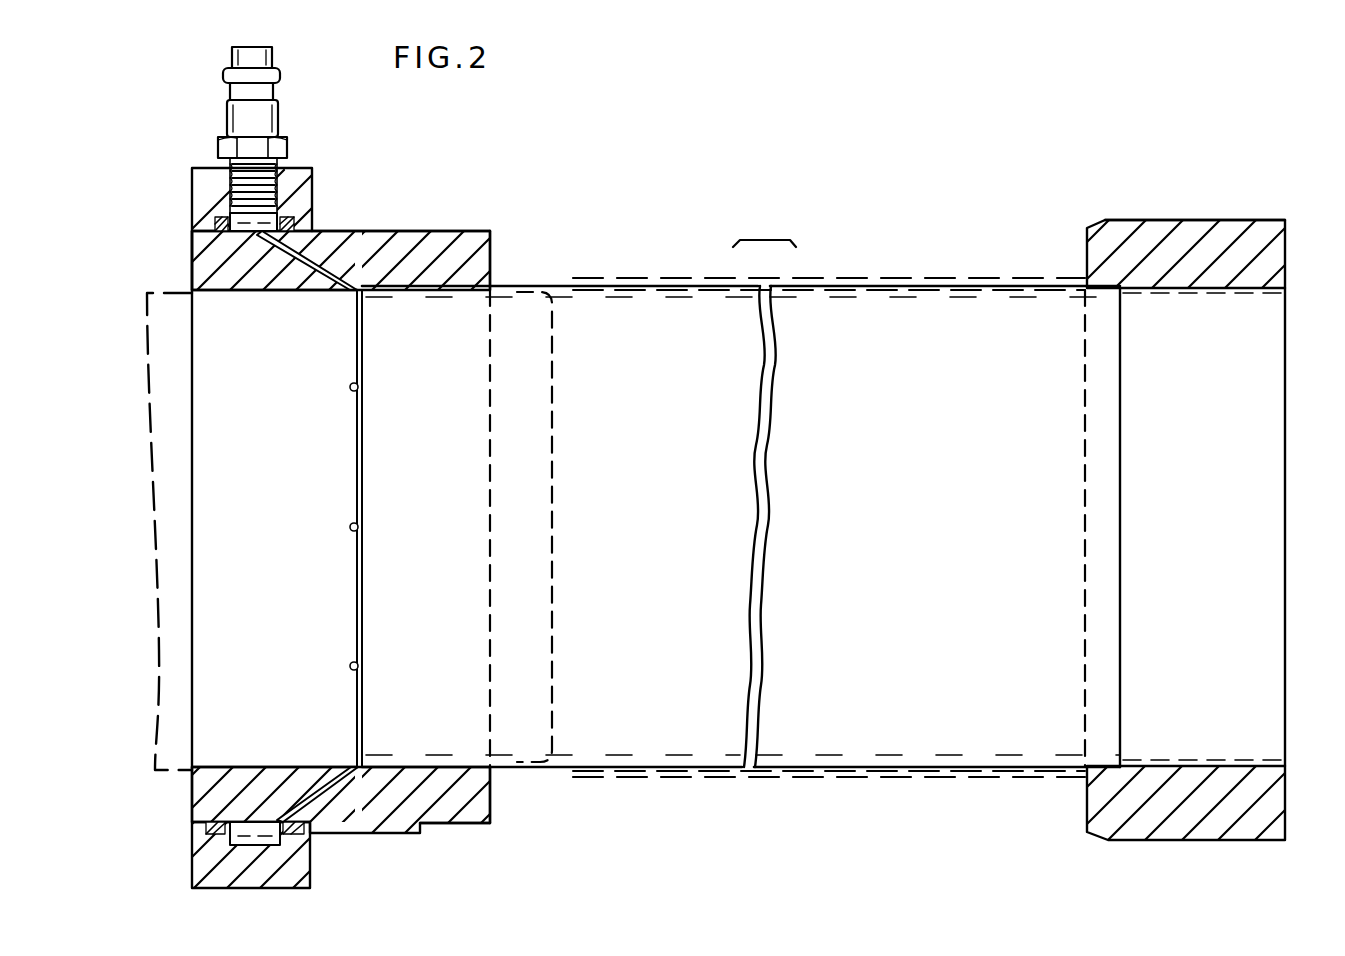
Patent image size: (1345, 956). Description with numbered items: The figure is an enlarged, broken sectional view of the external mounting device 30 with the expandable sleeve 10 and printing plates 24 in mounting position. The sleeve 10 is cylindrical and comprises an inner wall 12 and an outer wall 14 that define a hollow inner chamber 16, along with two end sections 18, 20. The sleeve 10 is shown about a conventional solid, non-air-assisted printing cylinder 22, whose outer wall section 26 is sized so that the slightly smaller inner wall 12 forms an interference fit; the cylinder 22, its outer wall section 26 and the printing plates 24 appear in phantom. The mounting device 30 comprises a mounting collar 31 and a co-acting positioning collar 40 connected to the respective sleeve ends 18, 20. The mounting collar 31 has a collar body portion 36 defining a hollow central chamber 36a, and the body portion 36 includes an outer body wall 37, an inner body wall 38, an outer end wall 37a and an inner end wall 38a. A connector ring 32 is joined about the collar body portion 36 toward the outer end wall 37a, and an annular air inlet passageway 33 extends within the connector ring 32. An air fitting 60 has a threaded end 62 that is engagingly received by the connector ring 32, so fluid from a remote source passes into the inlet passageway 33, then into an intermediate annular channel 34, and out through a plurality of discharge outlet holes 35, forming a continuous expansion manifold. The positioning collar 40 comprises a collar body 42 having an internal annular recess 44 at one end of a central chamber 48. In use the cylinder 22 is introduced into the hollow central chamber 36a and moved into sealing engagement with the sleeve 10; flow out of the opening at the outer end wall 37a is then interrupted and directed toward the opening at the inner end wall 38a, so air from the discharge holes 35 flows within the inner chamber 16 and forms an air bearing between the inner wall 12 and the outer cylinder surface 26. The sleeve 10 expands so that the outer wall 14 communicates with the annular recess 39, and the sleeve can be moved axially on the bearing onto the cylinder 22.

The expandable sleeve 10 is at (860, 782).
The inner wall 12 is at (985, 291).
The outer wall 14 is at (1045, 278).
The hollow inner chamber 16 is at (833, 527).
The end section 18 is at (357, 440).
The end section 20 is at (1123, 410).
The printing cylinder 22 is at (552, 562).
The printing plates 24 is at (922, 273).
The outer wall section 26 is at (170, 774).
The external mounting device 30 is at (465, 216).
The mounting collar 31 is at (490, 230).
The connector ring 32 is at (312, 172).
The annular air inlet passageway 33 is at (250, 226).
The intermediate annular channel 34 is at (330, 243).
The discharge outlet holes 35 is at (351, 387).
The collar body portion 36 is at (421, 246).
The hollow central chamber 36a is at (236, 523).
The outer body wall 37 is at (402, 231).
The outer end wall 37a is at (192, 262).
The inner body wall 38 is at (290, 292).
The inner end wall 38a is at (492, 258).
The annular recess 39 is at (1198, 294).
The positioning collar 40 is at (1248, 220).
The collar body 42 is at (1265, 262).
The internal annular recess 44 is at (1106, 283).
The central chamber 48 is at (1170, 592).
The air fitting 60 is at (278, 74).
The threaded end 62 is at (287, 152).